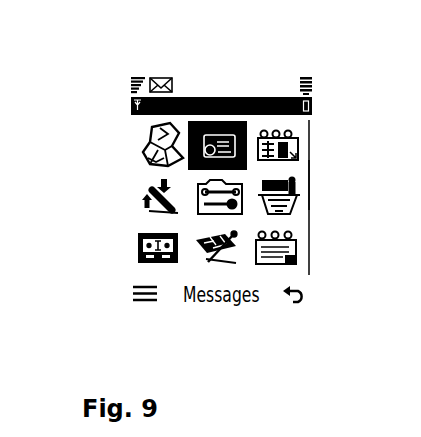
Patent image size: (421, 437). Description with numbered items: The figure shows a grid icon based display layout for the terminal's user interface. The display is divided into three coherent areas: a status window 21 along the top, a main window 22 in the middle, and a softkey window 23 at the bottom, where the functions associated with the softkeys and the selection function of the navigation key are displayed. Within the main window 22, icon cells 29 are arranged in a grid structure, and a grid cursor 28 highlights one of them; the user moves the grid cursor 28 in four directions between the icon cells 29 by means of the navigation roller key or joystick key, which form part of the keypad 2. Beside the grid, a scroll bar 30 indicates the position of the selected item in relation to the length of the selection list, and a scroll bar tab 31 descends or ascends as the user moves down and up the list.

The status window 21 is at (247, 80).
The main window 22 is at (350, 220).
The softkey window 23 is at (131, 279).
The grid cursor 28 is at (183, 140).
The icon cell 29 is at (290, 247).
The scroll bar 30 is at (309, 207).
The scroll bar tab 31 is at (310, 167).
The keypad 2 is at (414, 332).